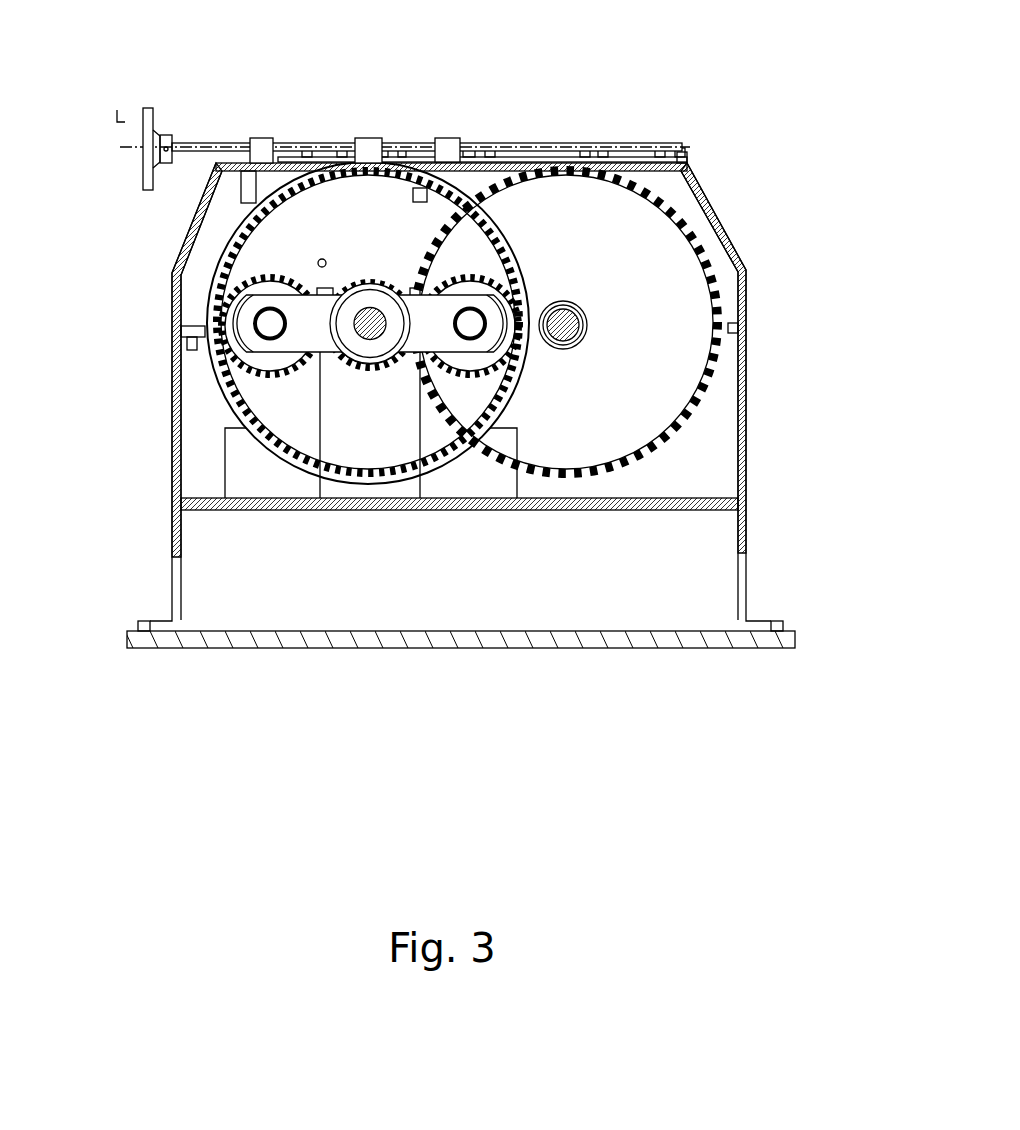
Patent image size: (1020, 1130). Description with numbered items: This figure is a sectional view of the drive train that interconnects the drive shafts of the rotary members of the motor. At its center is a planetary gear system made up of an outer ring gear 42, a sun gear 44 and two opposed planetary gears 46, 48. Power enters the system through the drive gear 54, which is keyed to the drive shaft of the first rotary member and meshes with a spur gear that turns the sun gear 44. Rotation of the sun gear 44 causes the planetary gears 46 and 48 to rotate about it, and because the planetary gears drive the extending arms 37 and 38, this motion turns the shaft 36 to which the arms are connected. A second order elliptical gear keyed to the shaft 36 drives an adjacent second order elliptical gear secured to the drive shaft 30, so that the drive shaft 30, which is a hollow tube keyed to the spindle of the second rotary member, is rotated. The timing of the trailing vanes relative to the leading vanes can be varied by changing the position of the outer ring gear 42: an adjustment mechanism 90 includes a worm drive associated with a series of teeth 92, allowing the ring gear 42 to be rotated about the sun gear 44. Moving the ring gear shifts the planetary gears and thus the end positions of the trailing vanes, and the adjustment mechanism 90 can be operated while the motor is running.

The drive shaft 30 is at (590, 322).
The shaft 36 is at (371, 320).
The extending arm 37 is at (268, 323).
The extending arm 38 is at (537, 305).
The outer ring gear 42 is at (372, 484).
The sun gear 44 is at (363, 275).
The planetary gear 46 is at (262, 297).
The planetary gear 48 is at (470, 278).
The drive gear 54 is at (583, 207).
The adjustment mechanism 90 is at (310, 120).
The series of teeth 92 is at (463, 178).